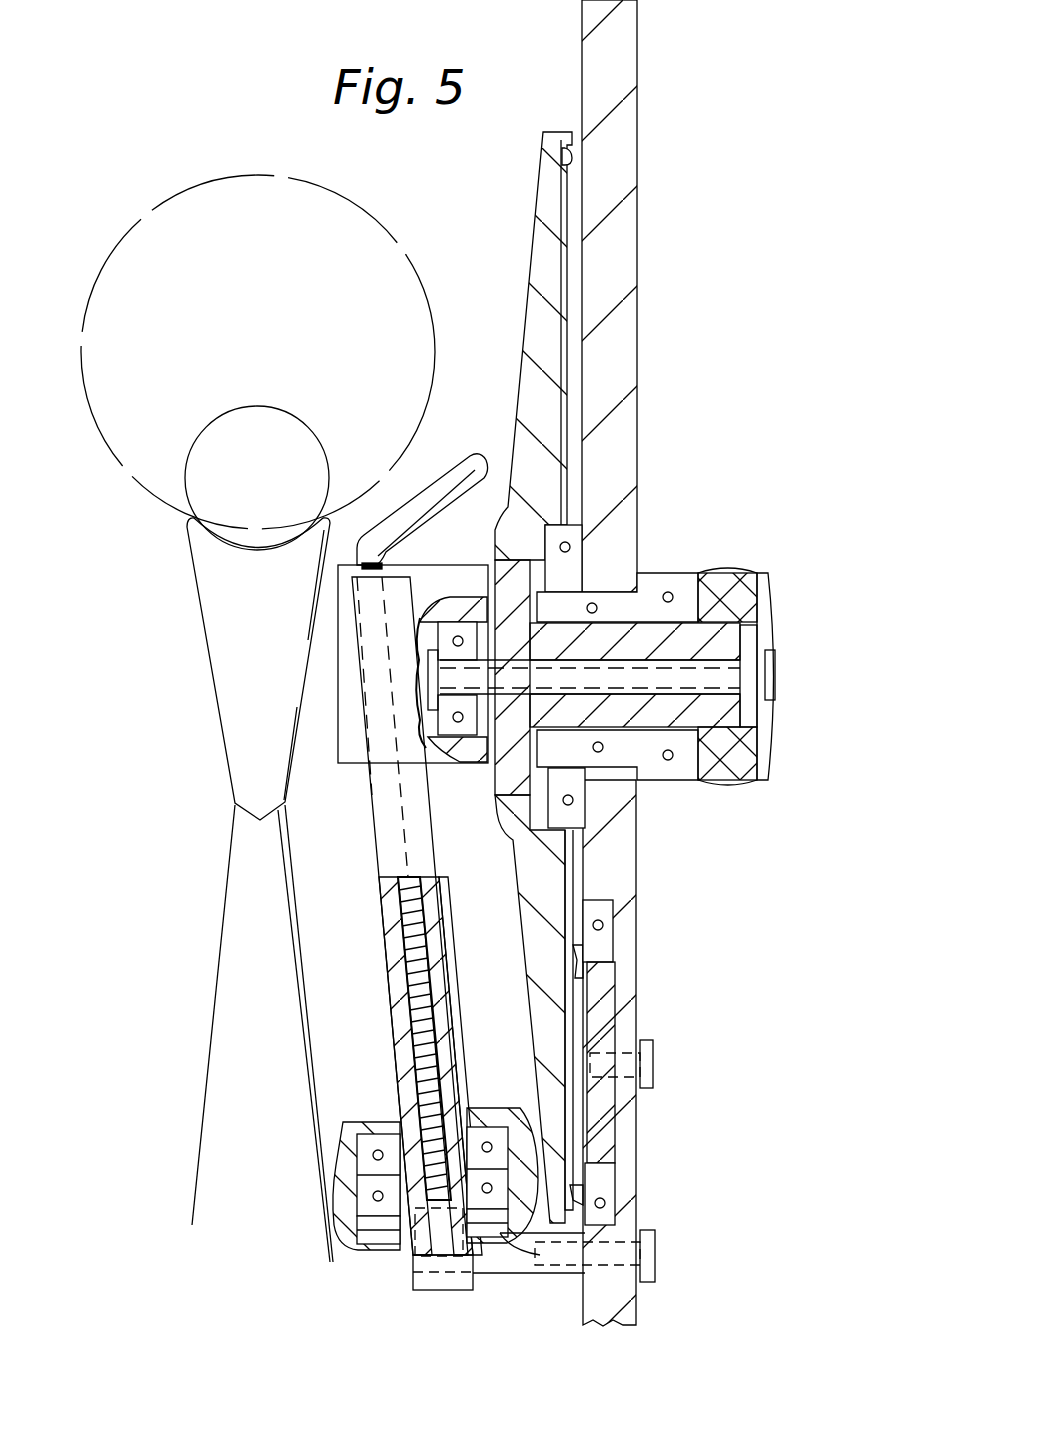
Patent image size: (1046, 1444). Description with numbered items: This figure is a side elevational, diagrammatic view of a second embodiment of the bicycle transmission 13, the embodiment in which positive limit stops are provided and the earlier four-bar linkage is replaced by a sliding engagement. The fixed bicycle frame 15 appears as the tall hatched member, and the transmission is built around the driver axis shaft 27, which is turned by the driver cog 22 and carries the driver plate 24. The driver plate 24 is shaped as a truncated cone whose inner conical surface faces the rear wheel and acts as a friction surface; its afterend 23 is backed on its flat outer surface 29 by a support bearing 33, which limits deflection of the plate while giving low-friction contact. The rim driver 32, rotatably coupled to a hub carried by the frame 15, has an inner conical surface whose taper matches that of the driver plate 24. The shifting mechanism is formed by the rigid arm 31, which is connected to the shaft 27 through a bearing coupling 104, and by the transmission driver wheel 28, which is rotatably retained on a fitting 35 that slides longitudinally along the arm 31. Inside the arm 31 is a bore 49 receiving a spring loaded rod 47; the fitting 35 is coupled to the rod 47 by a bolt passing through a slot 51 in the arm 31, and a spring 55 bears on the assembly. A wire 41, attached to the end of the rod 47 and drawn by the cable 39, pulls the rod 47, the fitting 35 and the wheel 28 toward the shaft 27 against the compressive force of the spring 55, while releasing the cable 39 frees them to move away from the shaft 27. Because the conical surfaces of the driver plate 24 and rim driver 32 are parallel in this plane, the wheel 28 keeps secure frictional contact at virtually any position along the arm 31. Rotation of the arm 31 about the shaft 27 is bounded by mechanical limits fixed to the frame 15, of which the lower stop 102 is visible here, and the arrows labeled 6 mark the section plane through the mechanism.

The section line 6- 6 is at (327, 442).
The transmission 13 is at (803, 663).
The bicycle frame 15 is at (630, 365).
The driver cog 22 is at (745, 575).
The afterend 23 is at (585, 1240).
The driver plate 24 is at (557, 1035).
The driver axis shaft 27 is at (668, 655).
The transmission driver wheel 28 is at (522, 1100).
The outer surface 29 is at (568, 875).
The rigid arm 31 is at (452, 1000).
The rim driver 32 is at (220, 948).
The support bearing 33 is at (590, 1190).
The fitting 35 is at (493, 1250).
The cable 39 is at (428, 487).
The wire 41 is at (400, 813).
The spring loaded rod 47 is at (440, 915).
The bore 49 is at (400, 955).
The slot 51 is at (392, 920).
The spring 55 is at (425, 925).
The mechanical limit 102 is at (655, 1258).
The bearing coupling 104 is at (462, 605).